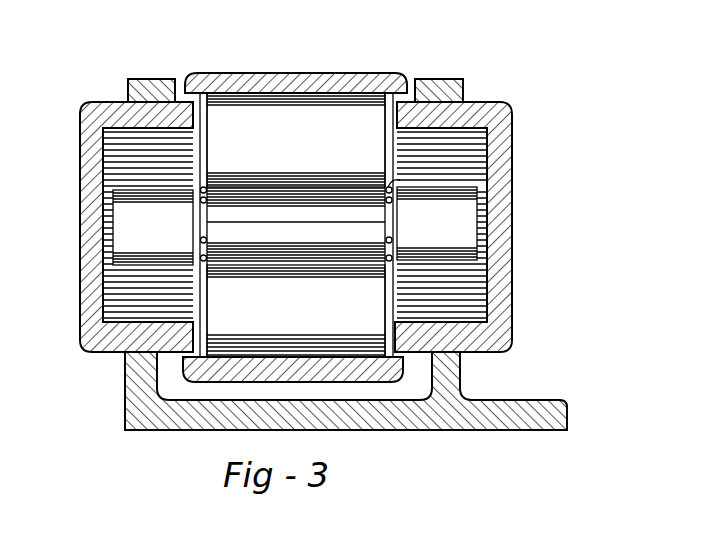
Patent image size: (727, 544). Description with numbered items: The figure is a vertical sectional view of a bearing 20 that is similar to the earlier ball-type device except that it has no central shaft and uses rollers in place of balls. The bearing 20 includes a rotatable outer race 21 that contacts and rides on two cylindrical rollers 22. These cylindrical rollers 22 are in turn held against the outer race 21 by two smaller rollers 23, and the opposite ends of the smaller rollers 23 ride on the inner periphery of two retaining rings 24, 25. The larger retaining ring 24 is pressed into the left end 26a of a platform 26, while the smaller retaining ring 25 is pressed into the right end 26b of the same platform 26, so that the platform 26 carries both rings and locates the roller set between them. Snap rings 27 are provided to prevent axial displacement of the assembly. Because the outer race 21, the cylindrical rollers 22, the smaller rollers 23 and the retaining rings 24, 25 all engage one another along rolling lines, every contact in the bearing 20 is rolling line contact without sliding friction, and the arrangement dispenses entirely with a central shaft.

The bearing 20 is at (620, 52).
The rotatable outer race 21 is at (320, 73).
The cylindrical rollers 22 is at (305, 143).
The smaller rollers 23 is at (449, 227).
The retaining ring 24 is at (80, 152).
The retaining ring 25 is at (512, 180).
The platform 26 is at (125, 407).
The left end of platform 26a is at (140, 80).
The right end of platform 26b is at (433, 79).
The snap rings 27 is at (393, 186).